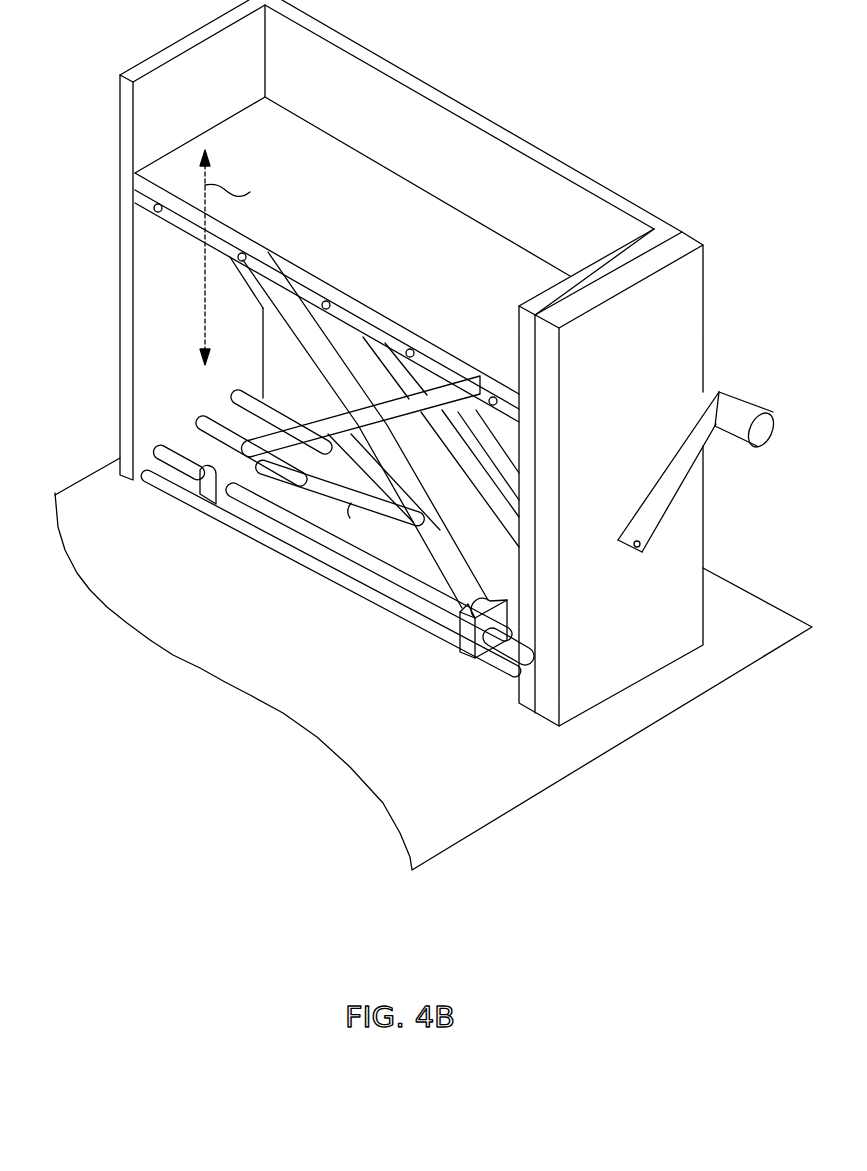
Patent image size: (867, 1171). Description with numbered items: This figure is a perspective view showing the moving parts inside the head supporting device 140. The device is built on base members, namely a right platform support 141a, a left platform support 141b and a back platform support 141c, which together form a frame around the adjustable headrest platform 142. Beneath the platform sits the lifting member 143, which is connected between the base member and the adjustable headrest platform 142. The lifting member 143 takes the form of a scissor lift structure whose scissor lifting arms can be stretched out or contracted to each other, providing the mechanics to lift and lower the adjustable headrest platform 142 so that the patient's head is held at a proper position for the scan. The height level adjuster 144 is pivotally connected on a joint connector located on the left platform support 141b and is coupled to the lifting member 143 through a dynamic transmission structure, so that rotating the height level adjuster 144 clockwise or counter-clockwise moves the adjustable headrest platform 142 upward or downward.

The head supporting device 140 is at (414, 385).
The right platform support 141a is at (125, 452).
The left platform support 141b is at (528, 693).
The back platform support 141c is at (447, 140).
The adjustable headrest platform 142 is at (381, 243).
The lifting member 143 is at (303, 433).
The height level adjuster 144 is at (662, 472).